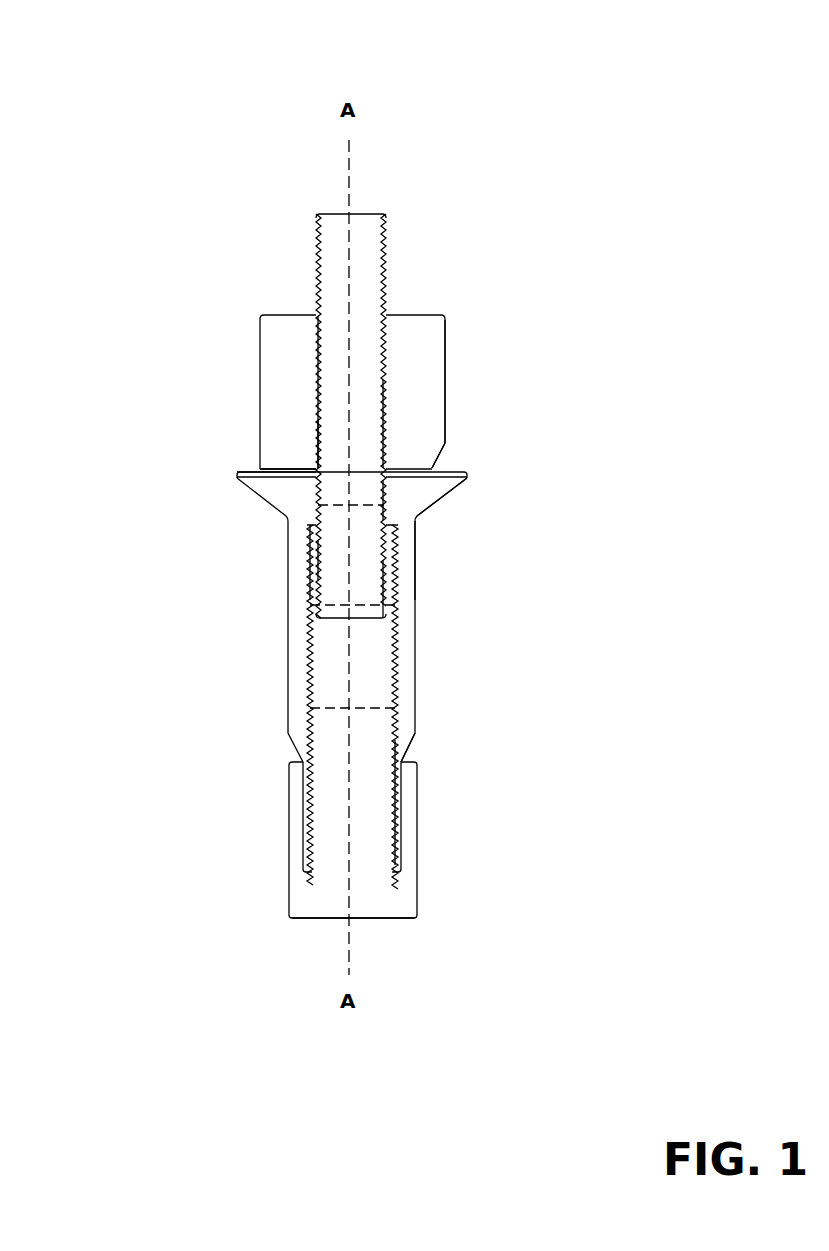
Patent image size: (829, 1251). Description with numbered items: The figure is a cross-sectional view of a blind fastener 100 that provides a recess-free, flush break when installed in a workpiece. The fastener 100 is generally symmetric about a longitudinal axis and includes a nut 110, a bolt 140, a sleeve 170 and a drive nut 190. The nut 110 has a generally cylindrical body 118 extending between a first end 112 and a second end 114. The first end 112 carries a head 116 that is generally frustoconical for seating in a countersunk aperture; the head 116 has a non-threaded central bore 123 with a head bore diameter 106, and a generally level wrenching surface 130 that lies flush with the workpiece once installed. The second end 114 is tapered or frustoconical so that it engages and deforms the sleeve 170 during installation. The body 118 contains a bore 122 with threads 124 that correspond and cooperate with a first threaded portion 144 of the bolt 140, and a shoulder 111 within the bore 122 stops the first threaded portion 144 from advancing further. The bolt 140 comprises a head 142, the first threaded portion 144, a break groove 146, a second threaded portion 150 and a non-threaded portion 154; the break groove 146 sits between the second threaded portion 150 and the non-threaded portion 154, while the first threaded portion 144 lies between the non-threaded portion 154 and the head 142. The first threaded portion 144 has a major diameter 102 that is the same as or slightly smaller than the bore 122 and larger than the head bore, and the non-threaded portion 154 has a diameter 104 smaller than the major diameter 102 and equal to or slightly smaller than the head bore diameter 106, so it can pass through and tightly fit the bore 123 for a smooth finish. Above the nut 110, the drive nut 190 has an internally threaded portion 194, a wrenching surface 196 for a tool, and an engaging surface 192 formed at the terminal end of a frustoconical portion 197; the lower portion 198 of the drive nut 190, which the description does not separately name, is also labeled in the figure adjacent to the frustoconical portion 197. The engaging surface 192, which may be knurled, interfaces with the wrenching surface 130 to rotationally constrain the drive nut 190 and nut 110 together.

The fastener 100 is at (492, 98).
The bolt 140 is at (386, 289).
The drive nut 190 is at (258, 346).
The internally threaded portion 194 is at (320, 350).
The wrenching surface 196 is at (445, 352).
The nut internal thread lower portion 198 is at (317, 445).
The frustoconical portion 197 is at (278, 462).
The wrenching surface 130 is at (265, 465).
The second threaded portion 150 is at (382, 388).
The engaging surface 192 is at (403, 468).
The first end 112 is at (468, 465).
The head 116 is at (435, 503).
The head bore diameter 106 is at (335, 500).
The central bore 123 is at (385, 495).
The break groove 146 is at (318, 565).
The non-threaded portion 154 is at (308, 586).
The diameter 104 is at (380, 602).
The shoulder 111 is at (406, 532).
The bore 122 is at (312, 616).
The body 118 is at (405, 618).
The threads 124 is at (310, 656).
The major diameter 102 is at (318, 708).
The nut 110 is at (421, 665).
The second end 114 is at (417, 746).
The first threaded portion 144 is at (385, 757).
The sleeve 170 is at (285, 815).
The head 142 is at (302, 898).